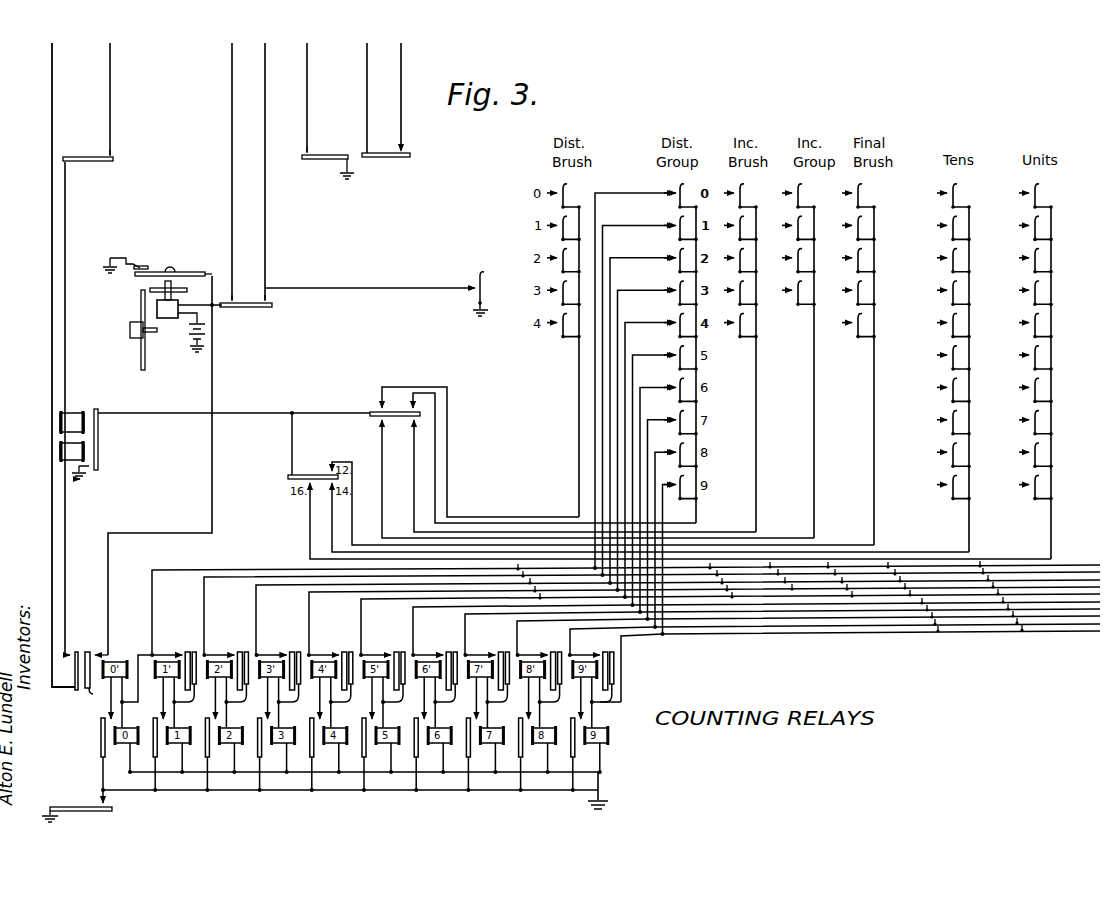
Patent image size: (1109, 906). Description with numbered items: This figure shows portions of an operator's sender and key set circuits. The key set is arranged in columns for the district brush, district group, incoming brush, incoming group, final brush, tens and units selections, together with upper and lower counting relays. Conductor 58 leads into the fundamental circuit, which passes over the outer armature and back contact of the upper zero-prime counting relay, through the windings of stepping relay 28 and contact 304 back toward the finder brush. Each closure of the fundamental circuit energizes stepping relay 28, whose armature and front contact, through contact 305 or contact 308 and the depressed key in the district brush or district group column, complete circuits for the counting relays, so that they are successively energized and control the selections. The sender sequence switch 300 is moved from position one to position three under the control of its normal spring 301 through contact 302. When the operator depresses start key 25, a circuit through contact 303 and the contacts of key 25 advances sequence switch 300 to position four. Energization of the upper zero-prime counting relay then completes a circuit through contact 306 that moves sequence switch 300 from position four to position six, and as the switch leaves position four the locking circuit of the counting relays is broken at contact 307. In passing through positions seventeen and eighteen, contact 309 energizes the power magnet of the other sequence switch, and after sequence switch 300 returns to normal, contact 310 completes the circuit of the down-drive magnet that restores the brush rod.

The start key 25 is at (477, 294).
The stepping relay 28 is at (75, 412).
The conductor 58 is at (51, 237).
The sequence switch 300 is at (153, 313).
The normal spring 301 is at (137, 273).
The contact 302 is at (233, 297).
The contact 303 is at (268, 301).
The contact 304 is at (114, 154).
The contact 305 is at (380, 403).
The contact 306 is at (103, 806).
The contact 307 is at (113, 809).
The contact 308 is at (412, 403).
The contact 309 is at (306, 150).
The contact 310 is at (400, 150).